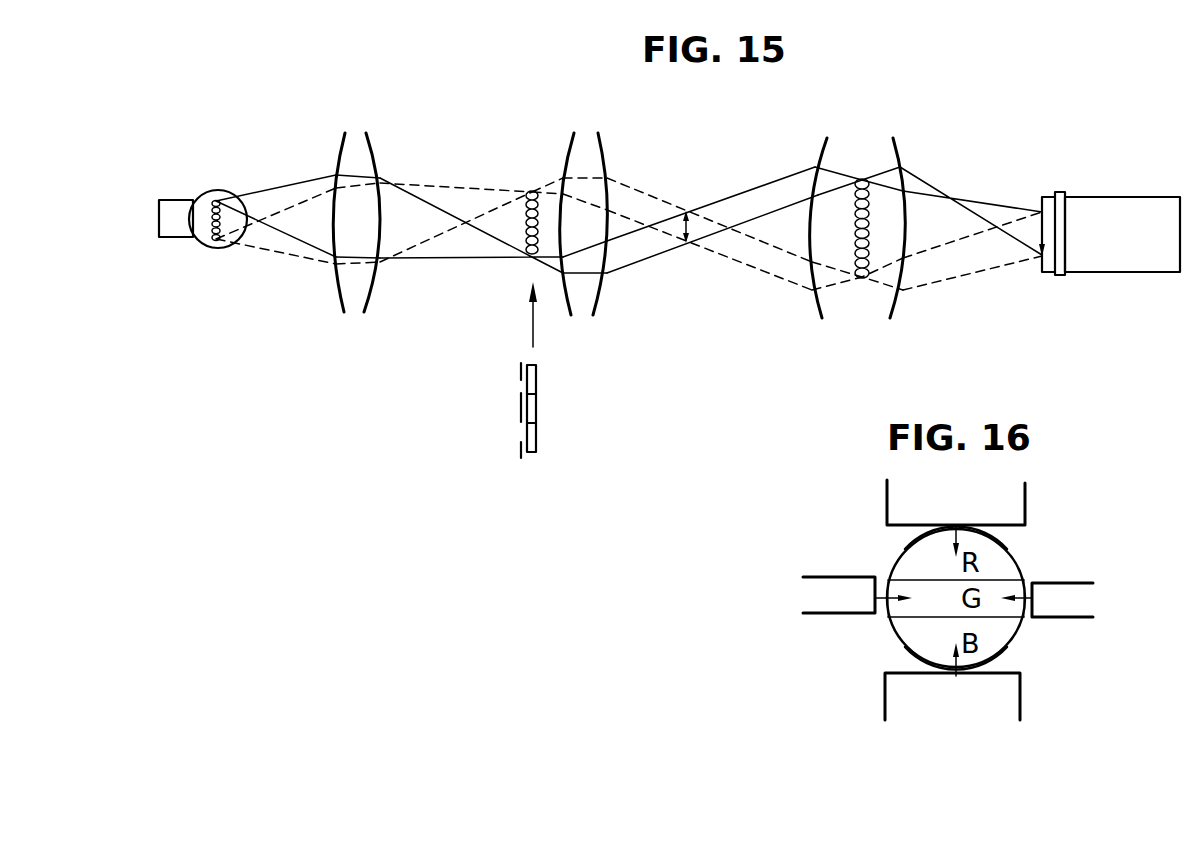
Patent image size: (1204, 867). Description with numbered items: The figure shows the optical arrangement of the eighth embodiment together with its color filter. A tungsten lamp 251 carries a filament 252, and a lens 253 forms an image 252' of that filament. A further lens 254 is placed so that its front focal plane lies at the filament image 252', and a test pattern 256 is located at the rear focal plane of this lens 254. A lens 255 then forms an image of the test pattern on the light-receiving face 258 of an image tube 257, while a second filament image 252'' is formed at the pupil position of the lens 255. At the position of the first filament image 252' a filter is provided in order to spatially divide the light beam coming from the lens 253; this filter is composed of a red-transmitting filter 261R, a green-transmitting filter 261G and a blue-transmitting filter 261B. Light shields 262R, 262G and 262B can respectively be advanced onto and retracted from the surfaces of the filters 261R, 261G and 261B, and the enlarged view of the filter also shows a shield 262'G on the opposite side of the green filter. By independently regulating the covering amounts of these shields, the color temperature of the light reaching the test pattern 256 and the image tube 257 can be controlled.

In FIG. 15, the tungsten lamp 251 is at (174, 210).
In FIG. 15, the filament 252 is at (220, 189).
In FIG. 15, the image of filament 252' is at (505, 196).
In FIG. 15, the image of filament 252'' is at (867, 263).
In FIG. 15, the lens 253 is at (357, 135).
In FIG. 15, the lens 254 is at (586, 148).
In FIG. 15, the lens 255 is at (856, 160).
In FIG. 15, the test pattern 256 is at (686, 209).
In FIG. 15, the image tube 257 is at (1115, 213).
In FIG. 15, the light-receiving face 258 is at (1036, 228).
In FIG. 15, the red-transmitting filter 261R is at (537, 379).
In FIG. 16, the red-transmitting filter 261R is at (990, 556).
In FIG. 15, the green-transmitting filter 261G is at (537, 409).
In FIG. 16, the green-transmitting filter 261G is at (1013, 608).
In FIG. 15, the blue-transmitting filter 261B is at (537, 440).
In FIG. 16, the blue-transmitting filter 261B is at (1000, 630).
In FIG. 15, the light shield 262R is at (521, 370).
In FIG. 16, the light shield 262R is at (1002, 503).
In FIG. 15, the light shield 262G is at (521, 408).
In FIG. 16, the light shield 262G is at (1072, 594).
In FIG. 15, the light shield 262B is at (521, 450).
In FIG. 16, the light shield 262B is at (1007, 701).
In FIG. 16, the green light stop (opposite side) 262'G is at (831, 560).